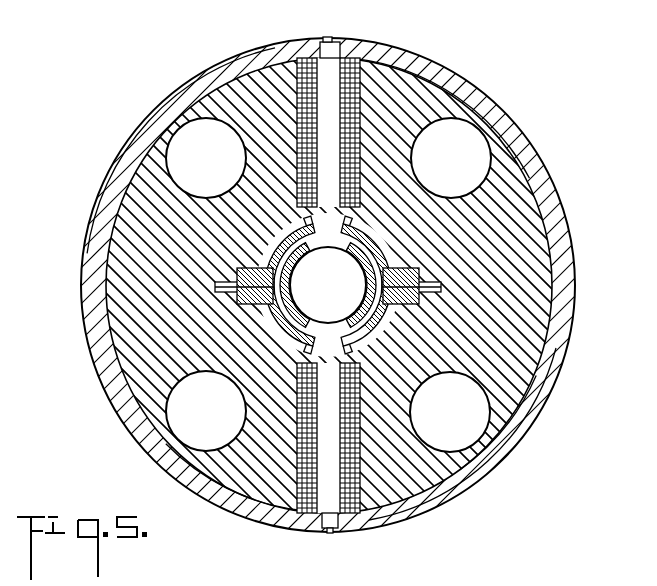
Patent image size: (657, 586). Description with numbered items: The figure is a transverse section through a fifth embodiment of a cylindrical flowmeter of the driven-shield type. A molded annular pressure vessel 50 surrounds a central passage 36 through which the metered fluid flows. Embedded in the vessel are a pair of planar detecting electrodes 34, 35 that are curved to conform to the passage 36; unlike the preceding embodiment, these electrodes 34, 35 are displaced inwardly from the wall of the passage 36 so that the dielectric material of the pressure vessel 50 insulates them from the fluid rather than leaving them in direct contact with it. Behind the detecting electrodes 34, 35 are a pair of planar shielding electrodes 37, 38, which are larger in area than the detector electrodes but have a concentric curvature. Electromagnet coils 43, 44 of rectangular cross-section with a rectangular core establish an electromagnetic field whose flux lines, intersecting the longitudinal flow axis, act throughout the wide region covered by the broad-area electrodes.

The detector electrode 34 is at (370, 252).
The detector electrode 35 is at (289, 317).
The central passage 36 is at (386, 318).
The shielding electrode 37 is at (386, 246).
The shielding electrode 38 is at (284, 339).
The electromagnet coil 43 is at (352, 62).
The electromagnet coil 44 is at (367, 497).
The pressure vessel 50 is at (535, 283).